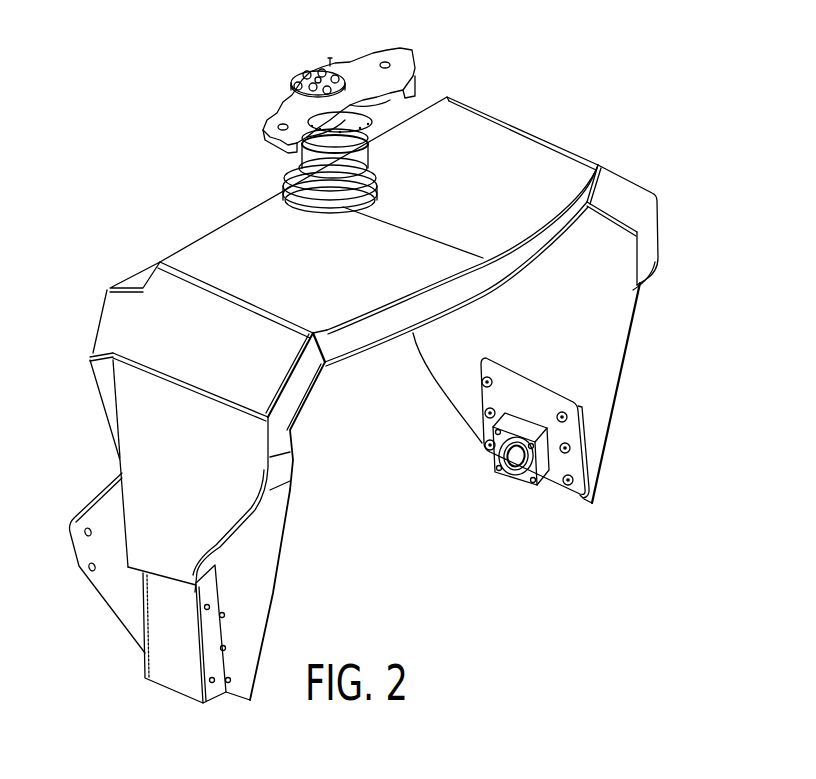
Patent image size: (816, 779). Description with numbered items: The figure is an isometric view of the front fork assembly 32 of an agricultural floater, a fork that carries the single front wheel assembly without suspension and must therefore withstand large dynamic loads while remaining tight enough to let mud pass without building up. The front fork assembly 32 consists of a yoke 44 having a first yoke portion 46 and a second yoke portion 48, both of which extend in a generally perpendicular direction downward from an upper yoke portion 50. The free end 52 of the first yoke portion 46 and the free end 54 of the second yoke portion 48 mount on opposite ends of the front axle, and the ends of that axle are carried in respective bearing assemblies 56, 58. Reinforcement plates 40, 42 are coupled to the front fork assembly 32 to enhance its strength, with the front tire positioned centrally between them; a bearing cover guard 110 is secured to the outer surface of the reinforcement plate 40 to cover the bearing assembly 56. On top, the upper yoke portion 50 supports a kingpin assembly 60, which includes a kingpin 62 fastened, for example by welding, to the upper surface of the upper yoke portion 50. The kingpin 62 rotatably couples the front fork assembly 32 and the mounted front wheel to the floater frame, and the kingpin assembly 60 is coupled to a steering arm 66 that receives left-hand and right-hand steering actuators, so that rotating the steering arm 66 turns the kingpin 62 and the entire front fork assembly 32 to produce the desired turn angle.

The front fork assembly 32 is at (618, 98).
The reinforcement plate 40 is at (126, 599).
The reinforcement plate 42 is at (607, 362).
The yoke 44 is at (184, 227).
The first yoke portion 46 is at (124, 401).
The second yoke portion 48 is at (638, 200).
The upper yoke portion 50 is at (480, 137).
The free end 52 is at (225, 700).
The free end 54 is at (611, 480).
The bearing assembly 56 is at (242, 597).
The bearing assembly 58 is at (540, 504).
The kingpin assembly 60 is at (259, 104).
The kingpin 62 is at (343, 170).
The steering arm 66 is at (363, 74).
The bearing cover guard 110 is at (178, 683).